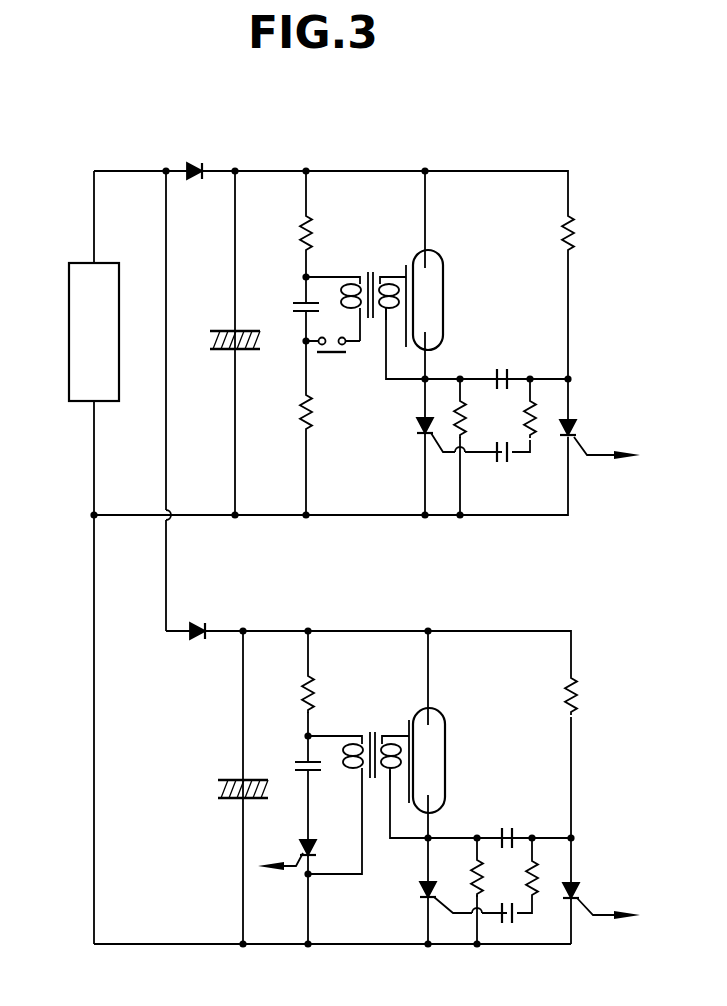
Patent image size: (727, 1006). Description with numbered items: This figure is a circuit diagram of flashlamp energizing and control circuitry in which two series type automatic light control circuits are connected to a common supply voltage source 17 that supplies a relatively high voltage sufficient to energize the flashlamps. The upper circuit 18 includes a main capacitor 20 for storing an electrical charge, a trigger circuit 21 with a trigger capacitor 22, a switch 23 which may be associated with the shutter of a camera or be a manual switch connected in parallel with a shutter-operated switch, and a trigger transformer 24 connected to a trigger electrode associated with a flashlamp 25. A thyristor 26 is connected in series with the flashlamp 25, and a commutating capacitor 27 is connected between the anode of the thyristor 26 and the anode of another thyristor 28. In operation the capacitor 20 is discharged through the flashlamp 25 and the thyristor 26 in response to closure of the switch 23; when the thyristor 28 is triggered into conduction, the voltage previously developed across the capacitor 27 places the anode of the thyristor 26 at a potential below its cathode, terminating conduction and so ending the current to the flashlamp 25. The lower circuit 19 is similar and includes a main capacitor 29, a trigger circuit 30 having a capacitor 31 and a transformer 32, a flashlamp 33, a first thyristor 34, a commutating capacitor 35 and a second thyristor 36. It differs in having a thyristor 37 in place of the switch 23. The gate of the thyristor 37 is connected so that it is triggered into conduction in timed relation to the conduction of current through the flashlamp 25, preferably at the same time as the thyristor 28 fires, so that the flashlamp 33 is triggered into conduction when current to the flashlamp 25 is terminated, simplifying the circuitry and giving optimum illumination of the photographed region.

The supply voltage source 17 is at (70, 392).
The circuit 18 is at (448, 162).
The circuit 19 is at (398, 622).
The main capacitor 20 is at (226, 330).
The trigger circuit 21 is at (357, 265).
The trigger capacitor 22 is at (298, 302).
The switch 23 is at (332, 358).
The trigger transformer 24 is at (372, 322).
The flashlamp 25 is at (432, 302).
The thyristor 26 is at (421, 424).
The commutating capacitor 27 is at (505, 370).
The thyristor 28 is at (574, 423).
The main capacitor 29 is at (230, 780).
The trigger circuit 30 is at (363, 725).
The capacitor 31 is at (305, 758).
The transformer 32 is at (372, 782).
The flashlamp 33 is at (432, 762).
The first thyristor 34 is at (424, 890).
The commutating capacitor 35 is at (514, 830).
The second thyristor 36 is at (580, 890).
The thyristor 37 is at (303, 858).